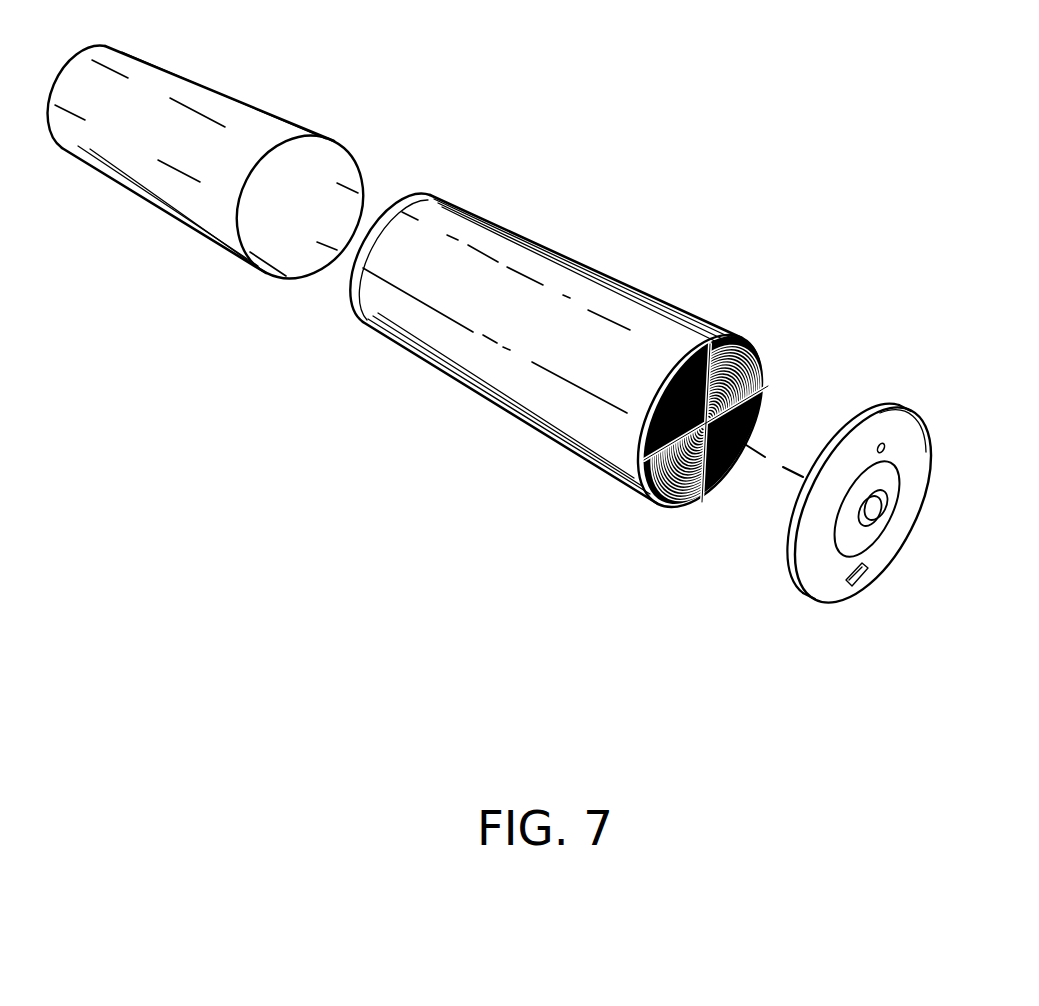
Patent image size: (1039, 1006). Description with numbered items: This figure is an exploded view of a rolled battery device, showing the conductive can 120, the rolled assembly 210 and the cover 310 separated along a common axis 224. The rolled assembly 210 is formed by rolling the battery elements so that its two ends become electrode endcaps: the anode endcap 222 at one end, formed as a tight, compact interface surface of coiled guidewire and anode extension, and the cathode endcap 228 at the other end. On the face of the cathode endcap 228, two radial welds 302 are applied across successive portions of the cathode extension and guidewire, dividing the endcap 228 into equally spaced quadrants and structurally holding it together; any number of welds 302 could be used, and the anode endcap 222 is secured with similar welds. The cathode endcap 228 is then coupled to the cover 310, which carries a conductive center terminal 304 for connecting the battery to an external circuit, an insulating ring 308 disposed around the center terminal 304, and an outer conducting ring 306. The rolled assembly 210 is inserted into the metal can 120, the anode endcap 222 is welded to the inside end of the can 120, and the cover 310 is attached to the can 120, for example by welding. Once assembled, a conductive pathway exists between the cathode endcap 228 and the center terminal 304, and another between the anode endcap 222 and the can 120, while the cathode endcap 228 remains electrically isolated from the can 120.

The conductive can 120 is at (232, 92).
The rolled assembly 210 is at (541, 353).
The anode endcap 222 is at (348, 282).
The longitudinal axis 224 is at (773, 460).
The cathode endcap 228 is at (727, 338).
The radial welds 302 is at (700, 497).
The conductive center terminal 304 is at (816, 468).
The outer conducting ring 306 is at (815, 593).
The insulating ring 308 is at (863, 540).
The cover 310 is at (827, 530).